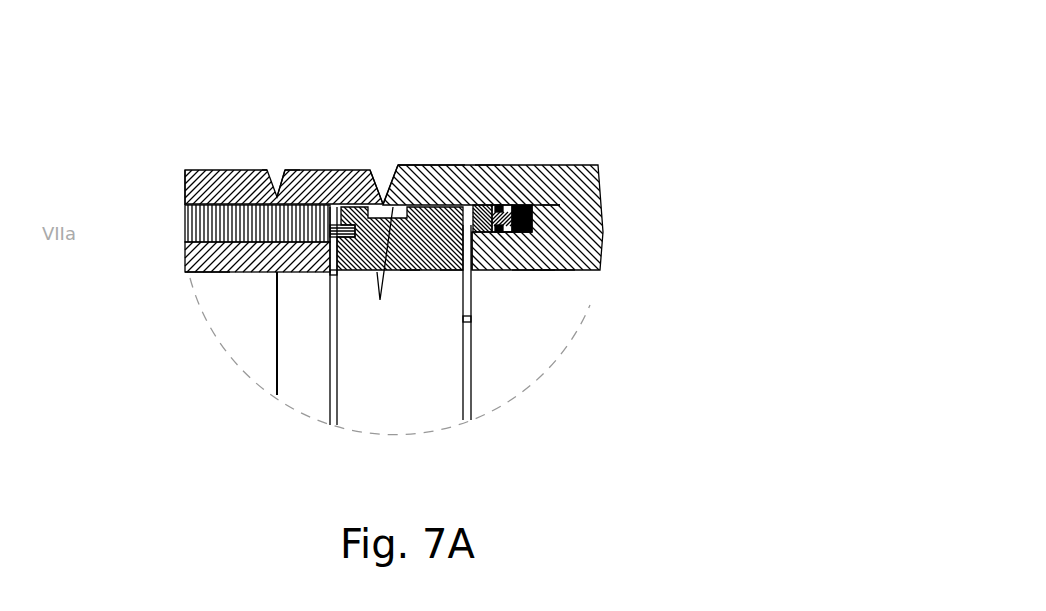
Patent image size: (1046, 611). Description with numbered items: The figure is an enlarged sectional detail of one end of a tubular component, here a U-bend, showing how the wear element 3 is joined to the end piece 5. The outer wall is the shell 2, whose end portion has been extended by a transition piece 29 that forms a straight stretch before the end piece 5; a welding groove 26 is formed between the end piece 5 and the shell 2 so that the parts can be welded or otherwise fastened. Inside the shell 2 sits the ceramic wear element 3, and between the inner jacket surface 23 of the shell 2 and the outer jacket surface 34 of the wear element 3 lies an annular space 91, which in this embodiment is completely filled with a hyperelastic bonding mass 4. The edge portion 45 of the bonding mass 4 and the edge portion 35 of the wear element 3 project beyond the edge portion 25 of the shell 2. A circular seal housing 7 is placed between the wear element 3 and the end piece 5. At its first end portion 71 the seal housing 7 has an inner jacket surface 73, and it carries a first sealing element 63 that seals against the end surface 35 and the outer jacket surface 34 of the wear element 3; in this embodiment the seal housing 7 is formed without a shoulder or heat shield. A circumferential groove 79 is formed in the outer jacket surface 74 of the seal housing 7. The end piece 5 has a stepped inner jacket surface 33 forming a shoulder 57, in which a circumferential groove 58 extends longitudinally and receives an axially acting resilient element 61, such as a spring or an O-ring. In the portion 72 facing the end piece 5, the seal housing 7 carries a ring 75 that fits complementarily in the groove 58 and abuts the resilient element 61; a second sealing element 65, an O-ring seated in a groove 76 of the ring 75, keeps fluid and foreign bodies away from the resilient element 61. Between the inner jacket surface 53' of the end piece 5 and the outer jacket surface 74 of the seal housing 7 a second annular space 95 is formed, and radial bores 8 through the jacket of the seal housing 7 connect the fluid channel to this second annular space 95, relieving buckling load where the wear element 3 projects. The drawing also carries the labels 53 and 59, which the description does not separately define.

The shell 2 is at (212, 170).
The wear element 3 is at (186, 256).
The bonding mass 4 is at (182, 225).
The end piece 5 is at (590, 165).
The seal housing 7 is at (432, 177).
The radial bores 8 is at (473, 270).
The inner jacket surface 23 is at (290, 167).
The edge portion 25 is at (283, 167).
The welding groove 26 is at (265, 170).
The transition piece 29 is at (333, 170).
The inner jacket surface 33 is at (210, 272).
The outer jacket surface 34 is at (277, 272).
The edge portion 35 is at (330, 272).
The edge portion 45 is at (347, 170).
The seal 53 is at (607, 324).
The inner jacket surface 53' is at (582, 137).
The shoulder 57 is at (495, 232).
The circumferential groove 58 is at (512, 222).
The lower surface 59 is at (555, 271).
The resilient element 61 is at (482, 213).
The first sealing element 63 is at (353, 272).
The second sealing element 65 is at (500, 205).
The first end portion 71 is at (447, 272).
The portion 72 is at (472, 322).
The inner jacket surface 73 is at (400, 180).
The outer jacket surface 74 is at (452, 177).
The ring 75 is at (505, 205).
The groove 76 is at (548, 271).
The circumferential groove 79 is at (383, 217).
The annular space 91 is at (186, 205).
The second annular space 95 is at (484, 177).